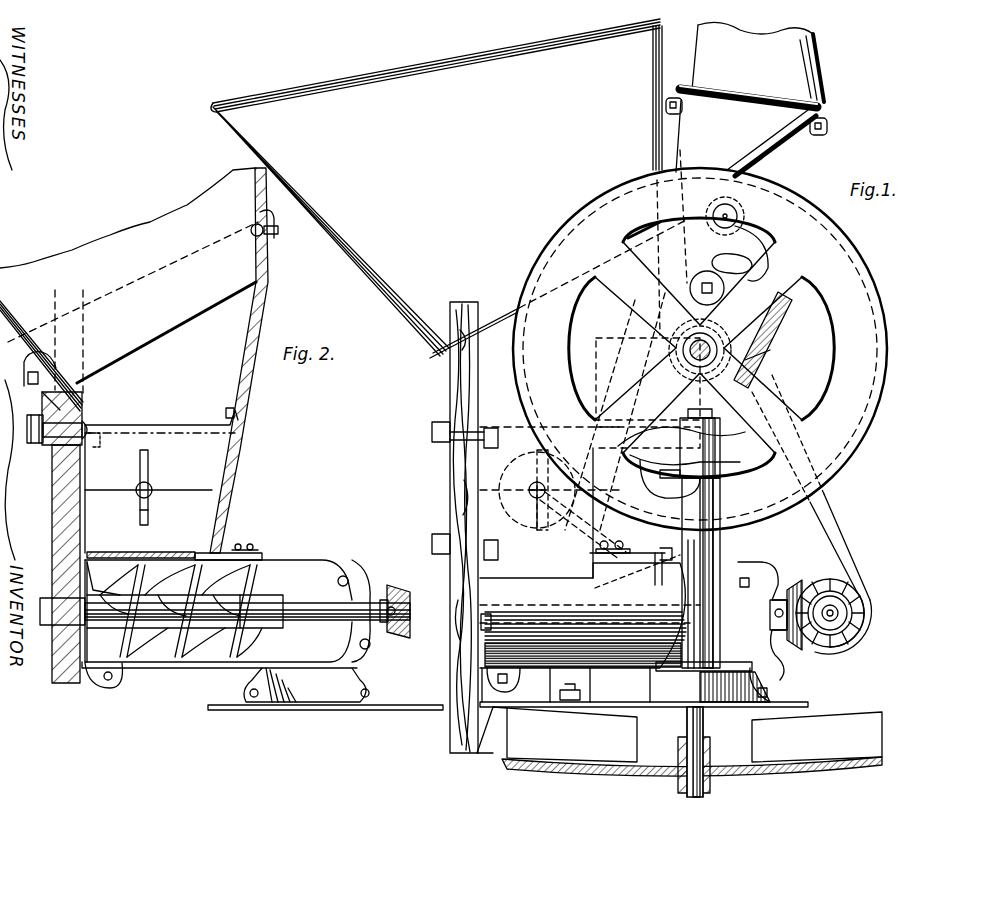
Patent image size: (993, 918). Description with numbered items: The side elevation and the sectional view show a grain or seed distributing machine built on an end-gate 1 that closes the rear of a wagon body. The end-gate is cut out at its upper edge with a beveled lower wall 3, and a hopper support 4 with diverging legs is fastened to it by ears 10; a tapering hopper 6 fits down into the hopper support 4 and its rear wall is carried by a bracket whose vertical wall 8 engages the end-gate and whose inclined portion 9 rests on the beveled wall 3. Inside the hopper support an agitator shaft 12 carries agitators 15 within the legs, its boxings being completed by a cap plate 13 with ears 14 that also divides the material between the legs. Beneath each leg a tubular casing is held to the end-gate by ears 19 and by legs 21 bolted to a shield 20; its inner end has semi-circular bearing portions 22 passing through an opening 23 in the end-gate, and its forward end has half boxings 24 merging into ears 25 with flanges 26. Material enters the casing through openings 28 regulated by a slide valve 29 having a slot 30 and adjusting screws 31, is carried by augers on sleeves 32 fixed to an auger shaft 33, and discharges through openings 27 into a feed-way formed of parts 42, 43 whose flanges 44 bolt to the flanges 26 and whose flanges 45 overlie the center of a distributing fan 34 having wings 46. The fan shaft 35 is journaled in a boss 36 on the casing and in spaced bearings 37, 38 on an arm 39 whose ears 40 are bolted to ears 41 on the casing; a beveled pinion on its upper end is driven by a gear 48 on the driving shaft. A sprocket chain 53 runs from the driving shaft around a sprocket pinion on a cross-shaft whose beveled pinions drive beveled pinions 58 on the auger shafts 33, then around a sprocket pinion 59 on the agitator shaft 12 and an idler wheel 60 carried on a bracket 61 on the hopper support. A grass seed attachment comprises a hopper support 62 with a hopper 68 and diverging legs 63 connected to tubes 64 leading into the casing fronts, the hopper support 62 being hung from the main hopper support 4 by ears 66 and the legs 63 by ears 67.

In FIG. 1, the end-gate 1 is at (450, 505).
In FIG. 2, the end-gate 1 is at (48, 532).
In FIG. 2, the beveled lower wall of cut out portion 3 is at (26, 398).
In FIG. 1, the hopper support 4 is at (702, 347).
In FIG. 2, the hopper support 4 is at (213, 352).
In FIG. 1, the hopper 6 is at (450, 188).
In FIG. 2, the hopper 6 is at (134, 360).
In FIG. 2, the vertical wall of bracket 8 is at (44, 437).
In FIG. 2, the inclined portion of bracket 9 is at (82, 410).
In FIG. 1, the ears 10 is at (496, 430).
In FIG. 1, the agitator shaft 12 is at (546, 494).
In FIG. 2, the agitator shaft 12 is at (140, 488).
In FIG. 2, the cap plate 13 is at (141, 489).
In FIG. 2, the ears of cap plate 14 is at (236, 416).
In FIG. 1, the agitators 15 is at (548, 516).
In FIG. 2, the agitators 15 is at (140, 518).
In FIG. 1, the ears of casings 19 is at (492, 612).
In FIG. 1, the shield 20 is at (548, 686).
In FIG. 1, the legs 21 is at (600, 684).
In FIG. 2, the semi-circular bearing portions 22 is at (50, 625).
In FIG. 2, the opening in end-gate 23 is at (52, 683).
In FIG. 2, the half boxings 24 is at (356, 590).
In FIG. 2, the ears 25 is at (336, 563).
In FIG. 1, the flanges or bearing plates 26 is at (752, 668).
In FIG. 2, the discharge openings 27 is at (282, 668).
In FIG. 2, the inlet openings 28 is at (174, 609).
In FIG. 2, the slide valves 29 is at (160, 552).
In FIG. 2, the longitudinal slots 30 is at (218, 553).
In FIG. 2, the adjusting screws 31 is at (262, 556).
In FIG. 2, the sleeves 32 is at (250, 628).
In FIG. 2, the auger shaft 33 is at (310, 596).
In FIG. 1, the distributing fans 34 is at (805, 766).
In FIG. 1, the fan shafts 35 is at (705, 740).
In FIG. 1, the bosses 36 is at (689, 604).
In FIG. 1, the bearing 37 is at (720, 555).
In FIG. 1, the bearing 38 is at (720, 470).
In FIG. 1, the arms 39 is at (620, 536).
In FIG. 1, the ears of arms 40 is at (636, 578).
In FIG. 1, the ears on casings 41 is at (672, 580).
In FIG. 1, the feed-way part 42 is at (735, 687).
In FIG. 2, the feed-way part 43 is at (306, 685).
In FIG. 1, the flanges of feed-way 44 is at (758, 680).
In FIG. 2, the flanges overlying fans 45 is at (228, 712).
In FIG. 1, the wings 46 is at (679, 734).
In FIG. 1, the gears 48 is at (866, 403).
In FIG. 1, the sprocket chain 53 is at (830, 548).
In FIG. 1, the beveled pinions 58 is at (796, 640).
In FIG. 2, the beveled pinions 58 is at (396, 640).
In FIG. 1, the sprocket pinion 59 is at (524, 520).
In FIG. 1, the idler wheel 60 is at (640, 452).
In FIG. 1, the bracket 61 is at (650, 400).
In FIG. 1, the hopper support of grass seed attachment 62 is at (746, 131).
In FIG. 1, the diverging legs 63 is at (780, 322).
In FIG. 1, the tubes 64 is at (770, 355).
In FIG. 1, the ears 66 is at (640, 236).
In FIG. 1, the ears 67 is at (760, 268).
In FIG. 1, the hopper 68 is at (758, 62).